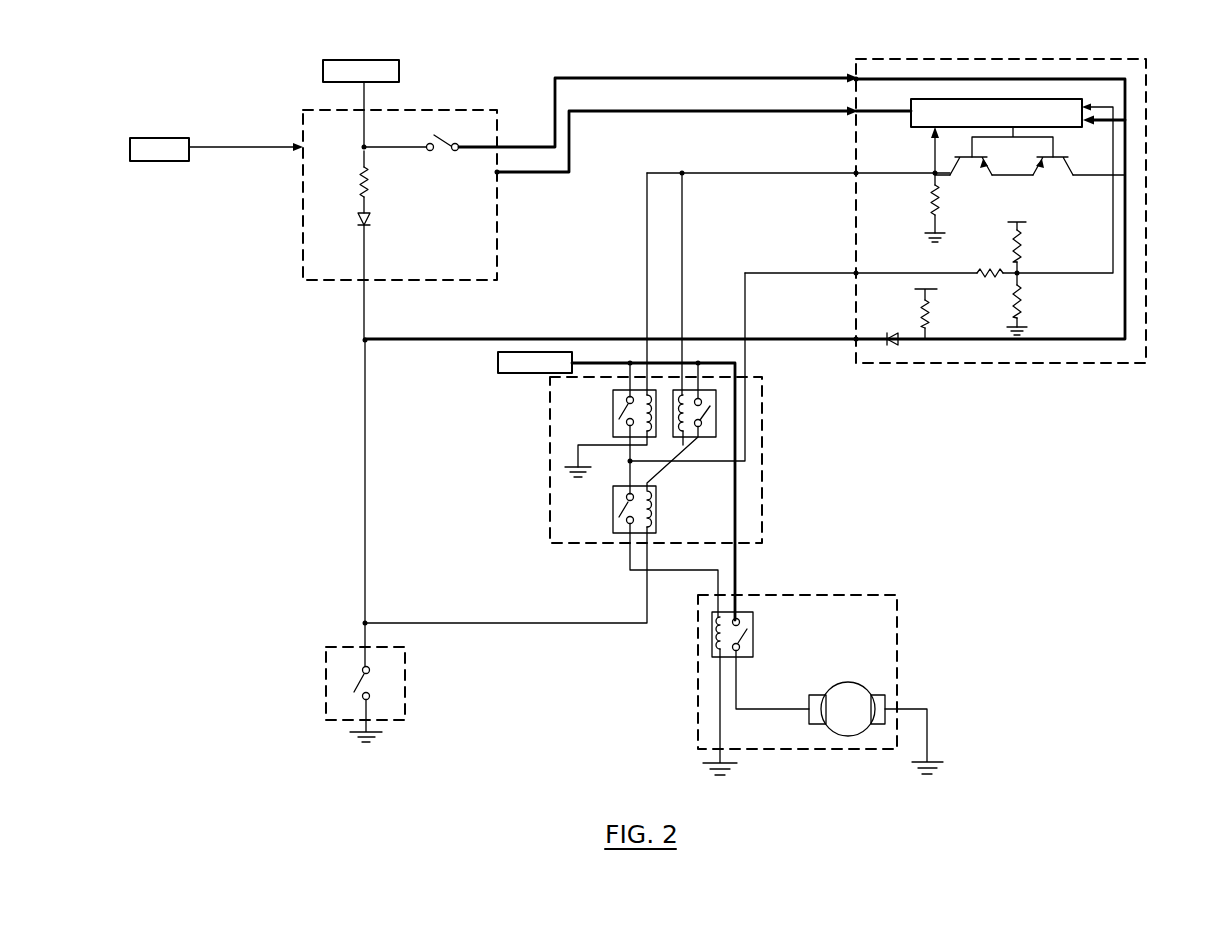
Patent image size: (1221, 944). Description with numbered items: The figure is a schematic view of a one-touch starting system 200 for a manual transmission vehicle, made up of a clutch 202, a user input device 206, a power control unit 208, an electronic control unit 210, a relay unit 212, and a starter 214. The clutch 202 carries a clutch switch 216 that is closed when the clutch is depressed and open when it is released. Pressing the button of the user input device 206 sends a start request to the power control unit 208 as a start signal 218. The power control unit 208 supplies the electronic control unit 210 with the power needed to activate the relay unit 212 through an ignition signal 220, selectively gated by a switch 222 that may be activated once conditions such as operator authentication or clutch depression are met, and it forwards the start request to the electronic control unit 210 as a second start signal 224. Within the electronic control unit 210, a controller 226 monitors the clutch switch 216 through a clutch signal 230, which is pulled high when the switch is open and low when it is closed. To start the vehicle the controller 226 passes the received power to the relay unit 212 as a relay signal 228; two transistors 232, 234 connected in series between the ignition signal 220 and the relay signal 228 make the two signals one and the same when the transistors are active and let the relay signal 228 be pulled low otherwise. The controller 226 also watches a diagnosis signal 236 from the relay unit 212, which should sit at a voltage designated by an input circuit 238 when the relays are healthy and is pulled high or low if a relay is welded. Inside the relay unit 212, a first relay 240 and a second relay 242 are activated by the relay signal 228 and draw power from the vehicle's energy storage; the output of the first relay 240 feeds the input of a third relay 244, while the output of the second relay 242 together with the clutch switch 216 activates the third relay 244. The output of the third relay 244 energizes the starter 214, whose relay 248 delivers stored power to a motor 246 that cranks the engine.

The one-touch starting system 200 is at (252, 44).
The clutch 202 is at (330, 647).
The user input device 206 is at (159, 138).
The power control unit 208 is at (401, 178).
The electronic control unit 210 is at (1062, 58).
The relay unit 212 is at (549, 453).
The starter 214 is at (855, 595).
The clutch switch 216 is at (392, 684).
The start signal 218 is at (248, 150).
The ignition signal 220 is at (735, 78).
The switch 222 is at (445, 170).
The start signal 224 is at (740, 111).
The controller 226 is at (1000, 97).
The relay signal 228 is at (773, 173).
The clutch signal 230 is at (1048, 341).
The transistor 232 is at (976, 181).
The transistor 234 is at (1050, 173).
The diagnosis signal 236 is at (808, 273).
The input circuit 238 is at (1096, 291).
The first relay 240 is at (613, 412).
The second relay 242 is at (716, 410).
The third relay 244 is at (657, 500).
The motor 246 is at (848, 688).
The relay 248 is at (712, 635).